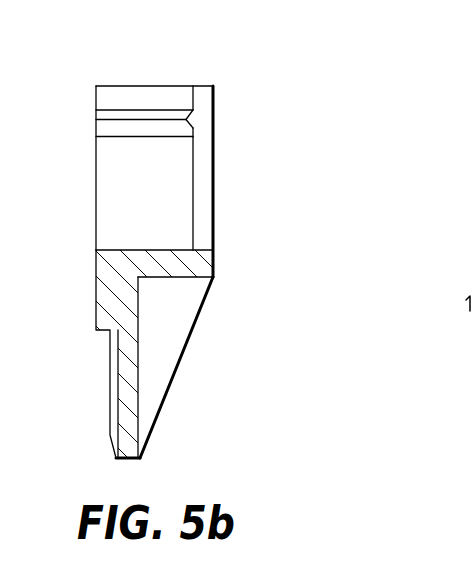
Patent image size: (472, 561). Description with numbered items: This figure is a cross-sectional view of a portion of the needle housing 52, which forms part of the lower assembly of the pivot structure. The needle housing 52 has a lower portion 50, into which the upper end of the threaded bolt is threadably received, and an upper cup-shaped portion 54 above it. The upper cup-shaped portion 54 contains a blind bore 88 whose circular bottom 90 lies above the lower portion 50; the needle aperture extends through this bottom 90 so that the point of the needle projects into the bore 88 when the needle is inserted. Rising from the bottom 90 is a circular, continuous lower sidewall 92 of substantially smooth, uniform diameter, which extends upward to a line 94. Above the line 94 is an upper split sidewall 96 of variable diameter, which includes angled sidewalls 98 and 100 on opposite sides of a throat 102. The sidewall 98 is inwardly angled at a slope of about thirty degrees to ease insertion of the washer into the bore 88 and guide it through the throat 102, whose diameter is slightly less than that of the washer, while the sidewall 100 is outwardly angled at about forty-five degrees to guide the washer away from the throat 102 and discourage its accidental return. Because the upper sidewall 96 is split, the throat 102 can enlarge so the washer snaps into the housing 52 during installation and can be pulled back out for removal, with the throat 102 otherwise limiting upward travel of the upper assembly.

The blind bore 88 is at (113, 68).
The circular bottom 90 is at (120, 252).
The lower sidewall 92 is at (120, 195).
The line 94 is at (117, 138).
The upper split sidewall 96 is at (202, 97).
The angled sidewall 98 is at (193, 110).
The angled sidewall 100 is at (188, 134).
The throat 102 is at (187, 120).
The upper cup-shaped portion 54 is at (224, 88).
The needle housing 52 is at (236, 270).
The lower portion 50 is at (224, 280).